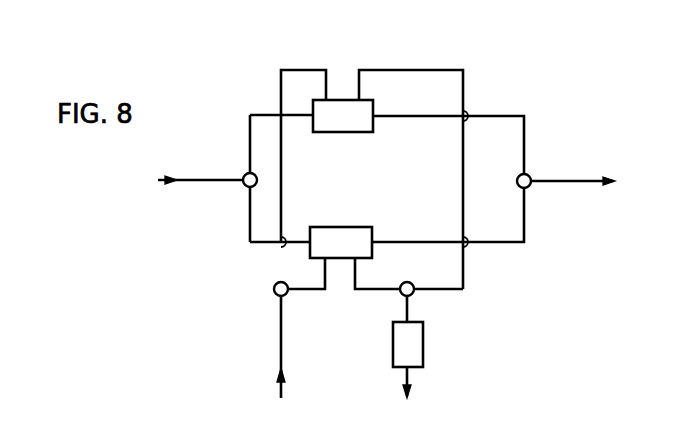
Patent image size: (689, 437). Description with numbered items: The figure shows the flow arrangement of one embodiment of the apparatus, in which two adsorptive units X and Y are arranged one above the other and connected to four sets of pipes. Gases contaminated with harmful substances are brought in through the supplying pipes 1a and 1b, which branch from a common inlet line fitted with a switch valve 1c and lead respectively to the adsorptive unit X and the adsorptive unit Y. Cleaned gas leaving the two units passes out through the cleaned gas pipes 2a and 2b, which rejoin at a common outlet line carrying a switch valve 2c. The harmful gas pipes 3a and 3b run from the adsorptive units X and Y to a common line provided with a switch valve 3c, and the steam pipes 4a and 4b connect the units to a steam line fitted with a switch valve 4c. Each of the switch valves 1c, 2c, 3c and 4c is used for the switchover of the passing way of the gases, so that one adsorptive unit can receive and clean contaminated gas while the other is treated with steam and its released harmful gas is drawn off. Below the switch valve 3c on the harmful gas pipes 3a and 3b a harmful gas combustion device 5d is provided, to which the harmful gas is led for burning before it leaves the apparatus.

The contaminated gas supplying pipe 1a is at (258, 113).
The contaminated gas supplying pipe 1b is at (261, 244).
The switch valve 1c is at (244, 173).
The cleaned gas pipe 2a is at (492, 116).
The cleaned gas pipe 2b is at (492, 243).
The switch valve 2c is at (518, 178).
The harmful gas pipe 3a is at (377, 70).
The harmful gas pipe 3b is at (372, 290).
The switch valve 3c is at (412, 295).
The steam pipe 4a is at (298, 70).
The steam pipe 4b is at (305, 290).
The switch valve 4c is at (274, 299).
The harmful gas combustion device 5d is at (423, 365).
The adsorptive unit X is at (354, 133).
The adsorptive unit Y is at (357, 226).